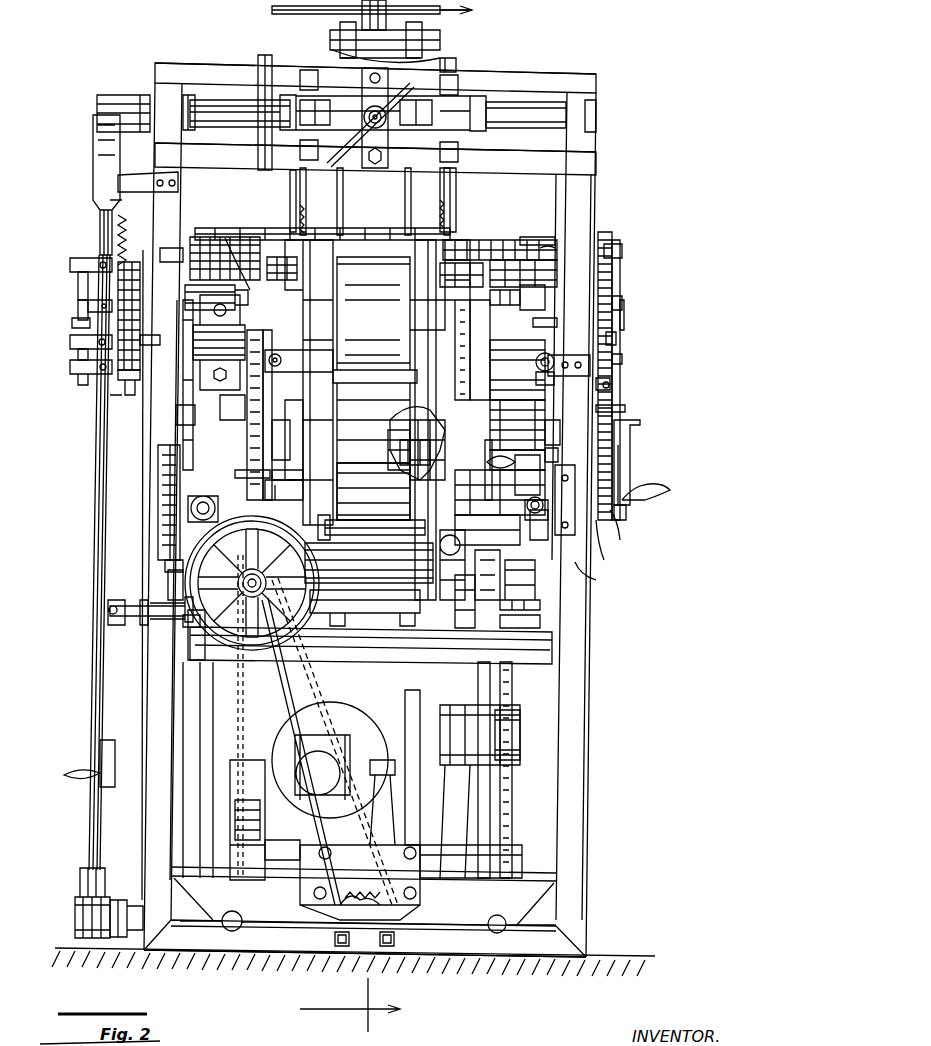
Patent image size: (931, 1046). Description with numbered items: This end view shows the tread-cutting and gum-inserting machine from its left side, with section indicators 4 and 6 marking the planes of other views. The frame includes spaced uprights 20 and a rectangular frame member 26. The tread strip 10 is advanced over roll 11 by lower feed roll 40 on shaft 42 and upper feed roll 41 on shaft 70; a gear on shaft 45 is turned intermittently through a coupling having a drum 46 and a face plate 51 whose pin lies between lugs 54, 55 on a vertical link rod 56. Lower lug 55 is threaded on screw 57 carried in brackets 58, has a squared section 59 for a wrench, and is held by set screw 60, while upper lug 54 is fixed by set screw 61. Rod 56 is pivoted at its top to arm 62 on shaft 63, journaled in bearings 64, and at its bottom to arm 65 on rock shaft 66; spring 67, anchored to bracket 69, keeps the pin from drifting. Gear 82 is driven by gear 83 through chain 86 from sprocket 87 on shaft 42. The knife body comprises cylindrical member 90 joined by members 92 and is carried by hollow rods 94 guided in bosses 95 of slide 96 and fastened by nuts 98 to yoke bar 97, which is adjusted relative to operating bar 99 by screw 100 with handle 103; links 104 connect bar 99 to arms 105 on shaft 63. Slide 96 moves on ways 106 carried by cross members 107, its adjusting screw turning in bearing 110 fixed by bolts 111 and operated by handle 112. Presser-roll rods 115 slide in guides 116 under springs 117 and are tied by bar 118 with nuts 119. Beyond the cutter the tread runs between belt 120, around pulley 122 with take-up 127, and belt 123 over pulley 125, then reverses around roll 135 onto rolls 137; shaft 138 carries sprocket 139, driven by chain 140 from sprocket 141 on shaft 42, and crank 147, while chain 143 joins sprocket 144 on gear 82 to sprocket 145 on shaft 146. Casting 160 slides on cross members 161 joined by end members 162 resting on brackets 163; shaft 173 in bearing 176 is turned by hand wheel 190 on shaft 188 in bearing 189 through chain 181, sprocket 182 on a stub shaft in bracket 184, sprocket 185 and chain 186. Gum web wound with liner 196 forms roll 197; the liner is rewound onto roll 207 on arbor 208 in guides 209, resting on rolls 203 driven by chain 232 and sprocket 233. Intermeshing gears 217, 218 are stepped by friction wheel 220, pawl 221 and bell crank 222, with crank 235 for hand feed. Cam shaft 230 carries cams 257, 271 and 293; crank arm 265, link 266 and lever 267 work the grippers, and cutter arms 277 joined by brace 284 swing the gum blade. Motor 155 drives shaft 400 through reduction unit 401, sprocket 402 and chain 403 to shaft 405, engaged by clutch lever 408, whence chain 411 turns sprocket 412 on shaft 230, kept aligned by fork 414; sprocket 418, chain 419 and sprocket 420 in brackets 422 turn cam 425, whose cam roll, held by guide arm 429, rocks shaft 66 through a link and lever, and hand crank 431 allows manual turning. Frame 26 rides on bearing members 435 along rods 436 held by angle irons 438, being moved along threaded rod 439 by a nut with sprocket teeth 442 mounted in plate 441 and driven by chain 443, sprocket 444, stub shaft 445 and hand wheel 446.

The section line 4- 4 is at (361, 519).
The section line 6- 6 is at (104, 216).
The tread strip 10 is at (525, 292).
The roll 11 is at (195, 300).
The uprights 20 is at (597, 95).
The rectangular frame member 26 is at (545, 705).
The lower feed roll 40 is at (140, 300).
The upper feed roll 41 is at (515, 240).
The shaft 42 is at (557, 322).
The shaft 45 is at (148, 345).
The drum 46 is at (160, 270).
The face plate 51 is at (130, 385).
The upper lug 54 is at (88, 305).
The lower lug 55 is at (70, 341).
The vertical link rod 56 is at (96, 468).
The screw 57 is at (78, 284).
The brackets 58 is at (70, 262).
The squared section 59 is at (72, 322).
The set screw 60 is at (78, 355).
The set screw 61 is at (78, 310).
The arm 62 is at (120, 100).
The shaft 63 is at (213, 110).
The bearings 64 is at (185, 100).
The arm 65 is at (75, 916).
The rock shaft 66 is at (134, 905).
The light spring 67 is at (128, 235).
The bracket 69 is at (142, 182).
The shaft 70 is at (570, 235).
The gear 82 is at (606, 232).
The gear 83 is at (615, 300).
The chain 86 is at (623, 302).
The sprocket 87 is at (618, 344).
The upper cylindrical member 90 is at (418, 228).
The members 92 is at (370, 232).
The vertical rods 94 is at (405, 184).
The guiding bosses 95 is at (310, 140).
The slide 96 is at (290, 58).
The yoke bar 97 is at (442, 42).
The nuts 98 is at (362, 28).
The operating bar 99 is at (458, 66).
The screw 100 is at (415, 56).
The operating handle 103 is at (480, 12).
The links 104 is at (278, 98).
The arms 105 is at (260, 133).
The ways 106 is at (300, 84).
The cross members 107 is at (540, 80).
The bearing 110 is at (388, 155).
The machine bolts 111 is at (390, 80).
The handle 112 is at (303, 170).
The rods 115 is at (300, 228).
The tubular guides 116 is at (296, 190).
The springs 117 is at (310, 212).
The bar 118 is at (312, 112).
The nuts 119 is at (425, 112).
The belt 120 is at (548, 405).
The pulley 122 is at (556, 370).
The belt 123 is at (558, 455).
The pulley 125 is at (560, 420).
The take-up 127 is at (623, 364).
The roll 135 is at (548, 458).
The rolls 137 is at (530, 472).
The shaft 138 is at (614, 396).
The sprocket 139 is at (620, 414).
The chain 140 is at (614, 380).
The sprocket 141 is at (625, 322).
The sprocket chain 143 is at (626, 512).
The sprocket 144 is at (612, 246).
The sprocket 145 is at (620, 535).
The shaft 146 is at (604, 548).
The crank 147 is at (670, 490).
The motor 155 is at (335, 725).
The box-like casting 160 is at (290, 450).
The flanged cross members 161 is at (548, 525).
The end members 162 is at (525, 505).
The brackets 163 is at (598, 582).
The shaft 173 is at (252, 583).
The bearing 176 is at (166, 566).
The chain 181 is at (162, 498).
The sprocket 182 is at (160, 445).
The bracket 184 is at (180, 426).
The second sprocket 185 is at (240, 425).
The chain 186 is at (248, 432).
The shaft 188 is at (248, 385).
The bearing 189 is at (219, 342).
The hand wheel 190 is at (183, 396).
The liner 196 is at (295, 450).
The roll 197 is at (389, 388).
The rolls 203 is at (428, 570).
The roll 207 is at (410, 500).
The arbor 208 is at (330, 530).
The guides 209 is at (295, 476).
The gear 217 is at (436, 335).
The gear 218 is at (515, 420).
The friction wheel 220 is at (490, 352).
The friction pawl 221 is at (490, 260).
The bell crank 222 is at (495, 370).
The shaft 230 is at (408, 440).
The chain 232 is at (545, 545).
The sprocket 233 is at (462, 628).
The crank 235 is at (556, 248).
The cam 257 is at (410, 450).
The crank arm 265 is at (230, 242).
The link 266 is at (282, 362).
The lever 267 is at (296, 490).
The cam 271 is at (290, 440).
The cutter arms 277 is at (225, 238).
The brace 284 is at (452, 240).
The cam 293 is at (235, 474).
The shaft 400 is at (265, 840).
The gear reduction unit 401 is at (296, 860).
The sprocket 402 is at (246, 780).
The chain 403 is at (216, 755).
The shaft 405 is at (458, 630).
The clutch shifting lever 408 is at (106, 611).
The chain 411 is at (400, 460).
The sprocket 412 is at (415, 420).
The fork 414 is at (470, 565).
The sprocket 418 is at (510, 592).
The chain 419 is at (512, 690).
The sprocket 420 is at (520, 748).
The vertical brackets 422 is at (410, 812).
The cam 425 is at (490, 690).
The guide arm 429 is at (462, 832).
The hand crank 431 is at (78, 768).
The bearing members 435 is at (195, 920).
The horizontal rods 436 is at (236, 934).
The angle irons 438 is at (462, 958).
The threaded rod 439 is at (385, 942).
The plate 441 is at (420, 893).
The sprocket teeth 442 is at (355, 889).
The sprocket chain 443 is at (340, 790).
The sprocket 444 is at (300, 632).
The stub shaft 445 is at (215, 655).
The hand wheel 446 is at (262, 660).